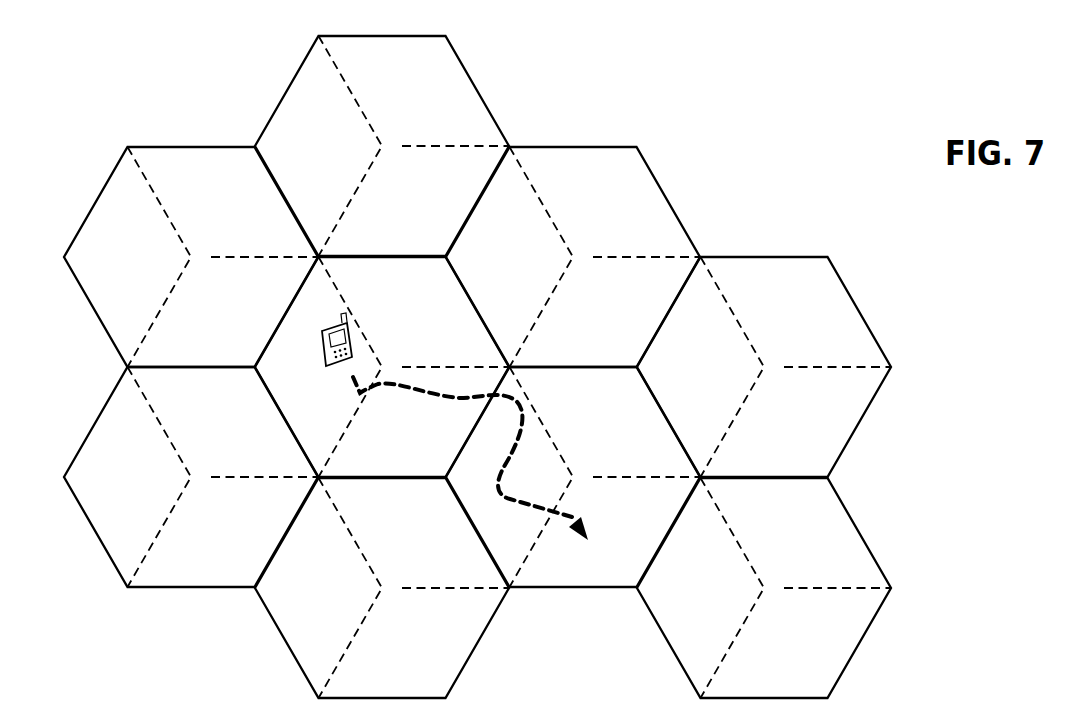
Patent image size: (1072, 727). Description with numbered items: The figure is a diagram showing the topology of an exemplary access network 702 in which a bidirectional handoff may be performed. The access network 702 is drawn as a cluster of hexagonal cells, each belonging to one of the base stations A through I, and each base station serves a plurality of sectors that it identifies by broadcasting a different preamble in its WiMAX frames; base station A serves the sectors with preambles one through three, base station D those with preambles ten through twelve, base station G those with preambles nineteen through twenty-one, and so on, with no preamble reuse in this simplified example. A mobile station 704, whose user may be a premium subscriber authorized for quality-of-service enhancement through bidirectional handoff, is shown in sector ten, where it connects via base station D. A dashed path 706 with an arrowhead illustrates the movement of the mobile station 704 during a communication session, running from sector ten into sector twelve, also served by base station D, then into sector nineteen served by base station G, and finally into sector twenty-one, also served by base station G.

The access network 702 is at (706, 74).
The mobile station 704 is at (321, 341).
The path 706 is at (460, 392).